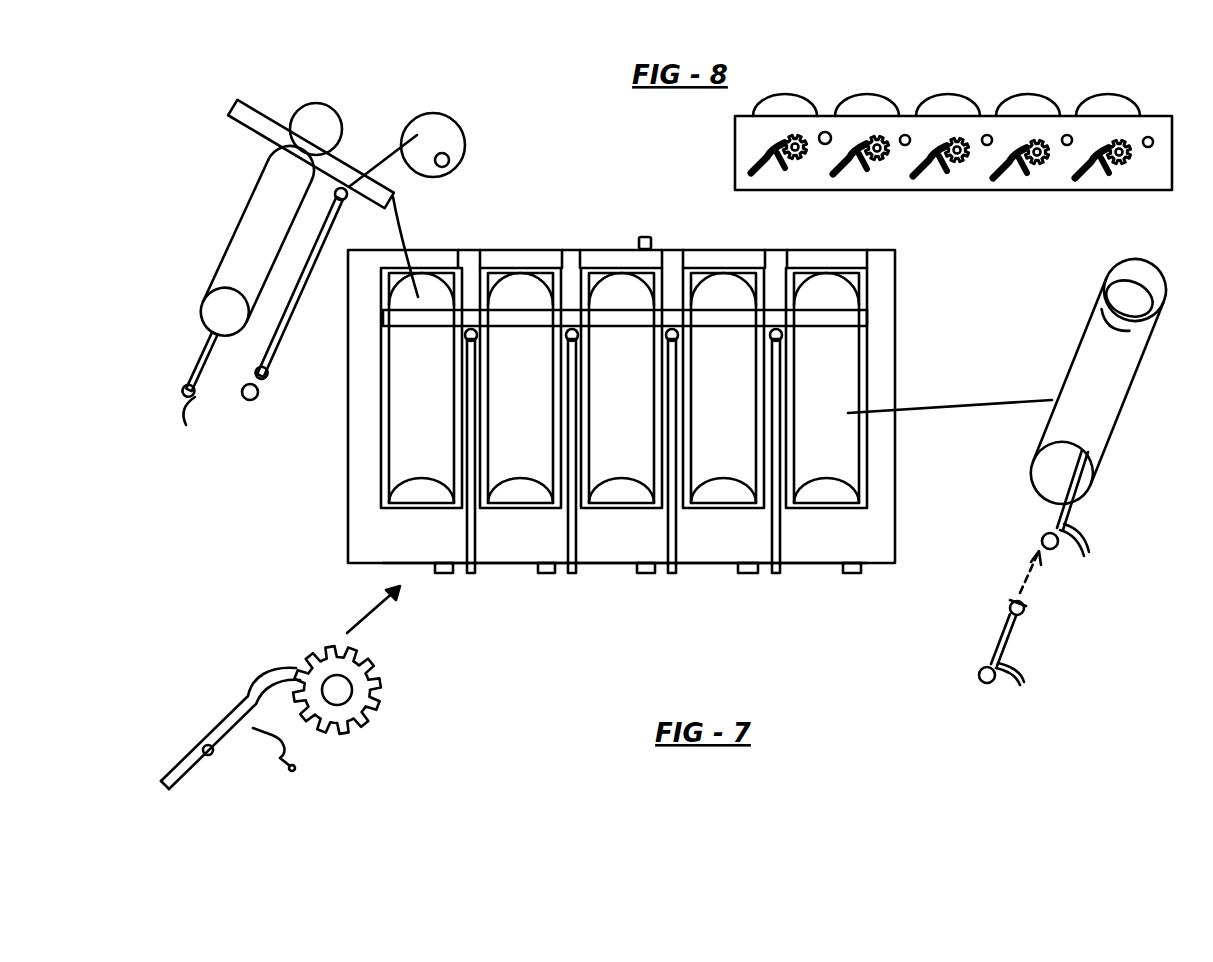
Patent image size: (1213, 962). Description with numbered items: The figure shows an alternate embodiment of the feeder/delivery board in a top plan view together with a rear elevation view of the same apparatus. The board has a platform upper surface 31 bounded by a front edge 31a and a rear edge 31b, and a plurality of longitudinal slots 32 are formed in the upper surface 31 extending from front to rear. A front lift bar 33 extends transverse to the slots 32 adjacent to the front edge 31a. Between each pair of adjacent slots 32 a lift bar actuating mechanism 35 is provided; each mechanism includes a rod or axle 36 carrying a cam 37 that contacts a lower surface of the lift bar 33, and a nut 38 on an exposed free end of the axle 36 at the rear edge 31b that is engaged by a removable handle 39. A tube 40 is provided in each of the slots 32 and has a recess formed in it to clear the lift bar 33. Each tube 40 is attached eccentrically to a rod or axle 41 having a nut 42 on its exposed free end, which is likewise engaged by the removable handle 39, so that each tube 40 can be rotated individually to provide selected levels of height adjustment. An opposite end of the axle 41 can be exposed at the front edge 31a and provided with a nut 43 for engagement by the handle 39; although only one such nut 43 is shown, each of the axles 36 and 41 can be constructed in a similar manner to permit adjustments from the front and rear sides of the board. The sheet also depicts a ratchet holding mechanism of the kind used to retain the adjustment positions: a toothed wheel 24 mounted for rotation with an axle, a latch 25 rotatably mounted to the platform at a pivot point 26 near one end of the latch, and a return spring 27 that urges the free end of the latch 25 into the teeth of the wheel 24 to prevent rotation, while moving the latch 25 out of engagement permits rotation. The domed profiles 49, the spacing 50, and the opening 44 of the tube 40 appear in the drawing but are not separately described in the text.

In FIG. 7, the toothed wheel 24 is at (378, 672).
In FIG. 7, the latch 25 is at (258, 680).
In FIG. 7, the pivot point 26 is at (183, 762).
In FIG. 7, the return spring 27 is at (255, 748).
In FIG. 7, the platform upper surface 31 is at (882, 368).
In FIG. 8, the platform upper surface 31 is at (1160, 116).
In FIG. 7, the front edge 31a is at (688, 252).
In FIG. 7, the rear edge 31b is at (610, 568).
In FIG. 7, the longitudinal slots 32 is at (460, 300).
In FIG. 7, the front lift bar 33 is at (857, 327).
In FIG. 7, the lift bar actuating mechanism 35 is at (473, 585).
In FIG. 8, the lift bar actuating mechanism 35 is at (825, 132).
In FIG. 7, the rod or axle 36 is at (305, 275).
In FIG. 7, the cam 37 is at (450, 113).
In FIG. 7, the nut 38 is at (449, 163).
In FIG. 7, the removable handle 39 is at (253, 398).
In FIG. 7, the tube 40 is at (240, 242).
In FIG. 7, the rod or axle 41 is at (322, 125).
In FIG. 7, the nut 42 is at (195, 422).
In FIG. 7, the nut 43 is at (645, 237).
In FIG. 7, the syringe opening 44 is at (1150, 320).
In FIG. 8, the domes 49 is at (782, 94).
In FIG. 8, the gear icons 50 is at (1070, 95).